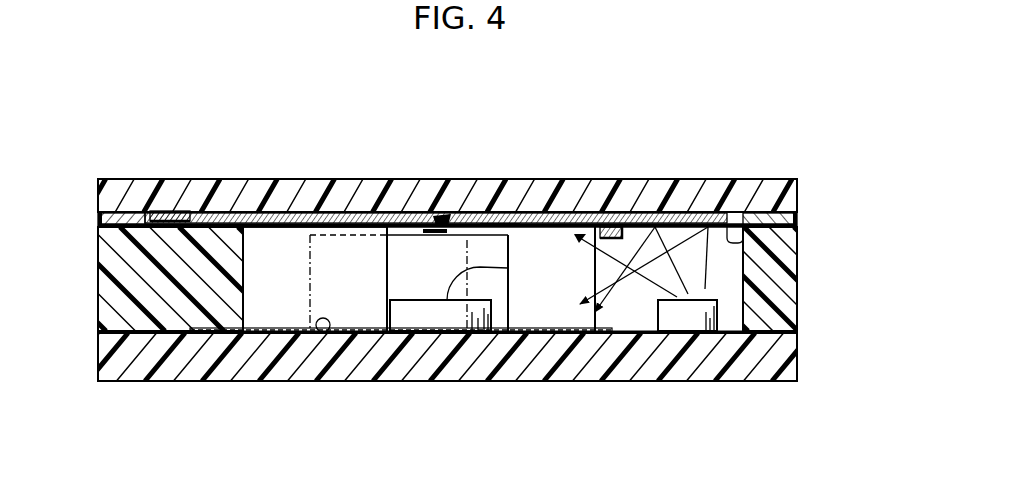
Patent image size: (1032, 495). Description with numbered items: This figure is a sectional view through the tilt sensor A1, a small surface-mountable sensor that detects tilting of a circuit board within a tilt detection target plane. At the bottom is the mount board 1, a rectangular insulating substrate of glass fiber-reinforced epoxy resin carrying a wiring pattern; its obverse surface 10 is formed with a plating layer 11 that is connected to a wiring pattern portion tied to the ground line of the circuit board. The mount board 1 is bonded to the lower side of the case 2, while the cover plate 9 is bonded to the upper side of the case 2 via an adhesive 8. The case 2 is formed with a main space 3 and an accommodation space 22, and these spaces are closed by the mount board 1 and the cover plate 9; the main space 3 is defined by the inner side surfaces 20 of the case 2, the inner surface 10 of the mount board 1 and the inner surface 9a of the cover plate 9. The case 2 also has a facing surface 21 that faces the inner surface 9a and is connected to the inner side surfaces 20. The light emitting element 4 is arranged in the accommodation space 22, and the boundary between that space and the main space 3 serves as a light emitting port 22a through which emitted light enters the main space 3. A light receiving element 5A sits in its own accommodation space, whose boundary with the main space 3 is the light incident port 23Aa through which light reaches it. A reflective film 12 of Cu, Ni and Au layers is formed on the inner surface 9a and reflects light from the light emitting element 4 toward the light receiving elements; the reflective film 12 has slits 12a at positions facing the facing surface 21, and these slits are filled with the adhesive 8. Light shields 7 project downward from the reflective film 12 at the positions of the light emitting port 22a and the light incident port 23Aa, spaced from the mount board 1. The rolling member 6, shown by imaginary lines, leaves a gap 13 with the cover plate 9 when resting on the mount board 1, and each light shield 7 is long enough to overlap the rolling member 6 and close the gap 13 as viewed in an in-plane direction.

The mount board 1 is at (790, 367).
The case 2 is at (773, 257).
The main space 3 is at (355, 243).
The light emitting element 4 is at (690, 312).
The light receiving element 5A is at (478, 335).
The rolling member 6 is at (312, 209).
The light shield 7 is at (395, 226).
The adhesive 8 is at (102, 203).
The cover plate 9 is at (157, 211).
The inner surface of the cover plate 9a is at (443, 212).
The obverse surface of the mount board 10 is at (321, 333).
The plating layer 11 is at (590, 333).
The reflective film 12 is at (497, 211).
The slit 12a is at (195, 212).
The gap 13 is at (432, 230).
The inner side surface of the case 20 is at (268, 285).
The facing surface 21 is at (136, 203).
The accommodation space 22 is at (737, 302).
The light emitting port 22a is at (606, 240).
The light incident port 23Aa is at (431, 287).
The tilt sensor A1 is at (802, 181).